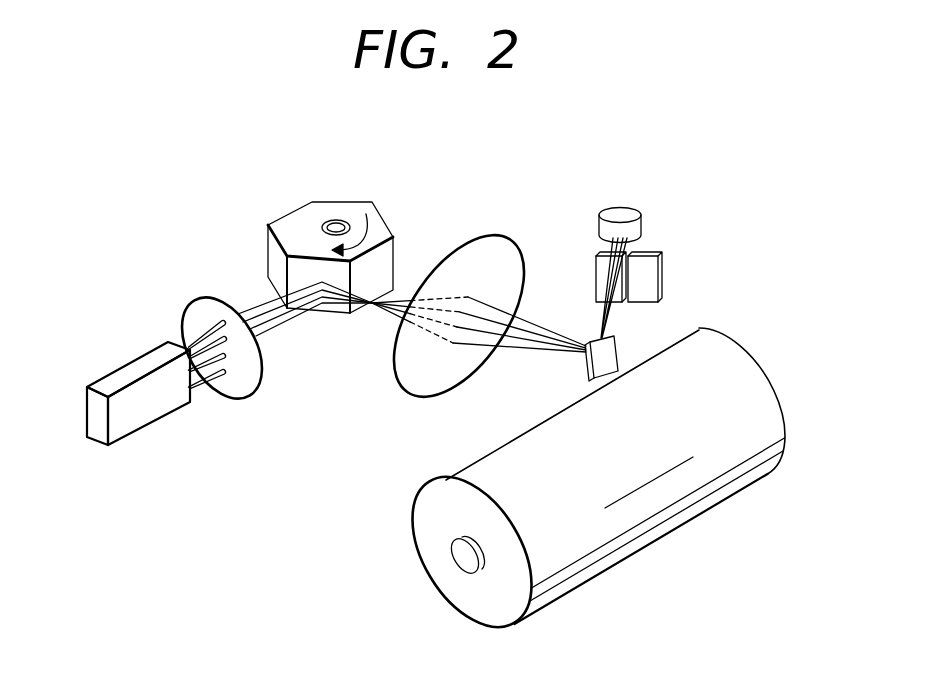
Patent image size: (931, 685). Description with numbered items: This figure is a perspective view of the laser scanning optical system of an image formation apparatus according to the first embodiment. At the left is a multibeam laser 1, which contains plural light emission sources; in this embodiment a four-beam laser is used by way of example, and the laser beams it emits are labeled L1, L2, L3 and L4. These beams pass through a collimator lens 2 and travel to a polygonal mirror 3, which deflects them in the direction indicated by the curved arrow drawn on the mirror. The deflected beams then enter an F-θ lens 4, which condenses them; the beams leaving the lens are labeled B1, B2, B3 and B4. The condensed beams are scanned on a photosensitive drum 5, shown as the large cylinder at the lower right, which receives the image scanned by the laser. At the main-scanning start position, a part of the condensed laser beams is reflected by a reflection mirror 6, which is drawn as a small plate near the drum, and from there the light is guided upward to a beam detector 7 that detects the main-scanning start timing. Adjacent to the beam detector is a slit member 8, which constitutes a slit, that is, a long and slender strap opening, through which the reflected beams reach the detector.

The multibeam laser 1 is at (151, 409).
The collimator lens 2 is at (243, 392).
The polygonal mirror 3 is at (377, 194).
The F-θ lens 4 is at (491, 248).
The photosensitive drum 5 is at (733, 348).
The reflection mirror 6 is at (622, 350).
The beam detector 7 is at (625, 213).
The slit member 8 is at (594, 255).
The laser beam L1 is at (280, 342).
The laser beam L2 is at (291, 325).
The laser beam L3 is at (252, 320).
The laser beam L4 is at (263, 307).
The condensed beam B1 is at (527, 320).
The condensed beam B2 is at (553, 330).
The condensed beam B3 is at (518, 338).
The condensed beam B4 is at (553, 363).